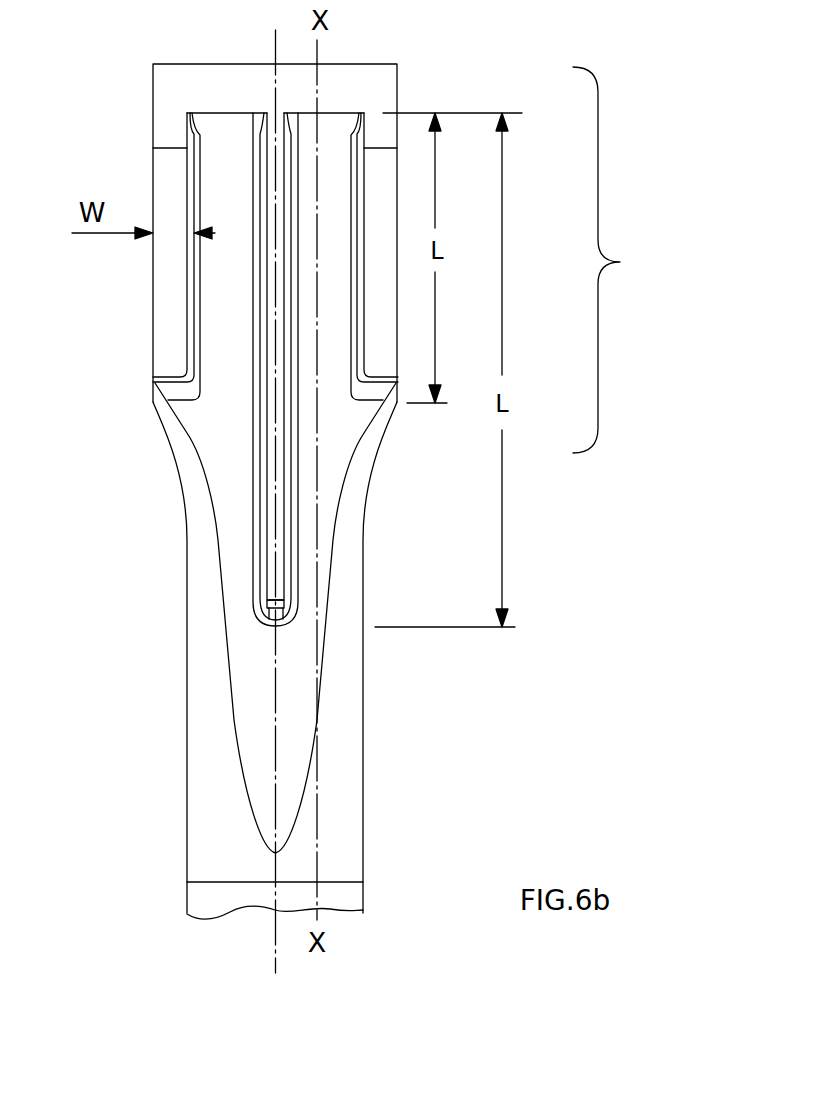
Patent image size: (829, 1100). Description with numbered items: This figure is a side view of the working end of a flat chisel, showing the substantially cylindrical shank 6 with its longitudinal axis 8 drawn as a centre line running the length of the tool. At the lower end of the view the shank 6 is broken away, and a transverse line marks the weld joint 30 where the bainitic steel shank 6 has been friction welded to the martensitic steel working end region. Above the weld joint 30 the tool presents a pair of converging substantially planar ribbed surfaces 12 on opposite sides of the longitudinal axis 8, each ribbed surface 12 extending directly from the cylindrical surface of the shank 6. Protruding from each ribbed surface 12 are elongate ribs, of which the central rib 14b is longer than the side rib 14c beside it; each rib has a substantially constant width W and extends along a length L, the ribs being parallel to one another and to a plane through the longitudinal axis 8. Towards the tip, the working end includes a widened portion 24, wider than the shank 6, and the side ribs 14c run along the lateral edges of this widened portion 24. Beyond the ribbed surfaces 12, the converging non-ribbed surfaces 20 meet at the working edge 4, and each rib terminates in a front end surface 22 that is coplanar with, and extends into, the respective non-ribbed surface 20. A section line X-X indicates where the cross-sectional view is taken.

The working edge 4 is at (343, 63).
The non-ribbed surface 20 is at (373, 90).
The front end surface 22 is at (173, 127).
The elongate rib 14c is at (170, 315).
The central rib 14b is at (268, 433).
The ribbed surface 12 is at (225, 458).
The shank 6 is at (225, 757).
The weld joint 30 is at (228, 882).
The longitudinal axis 8 is at (275, 897).
The widened portion 24 is at (618, 260).